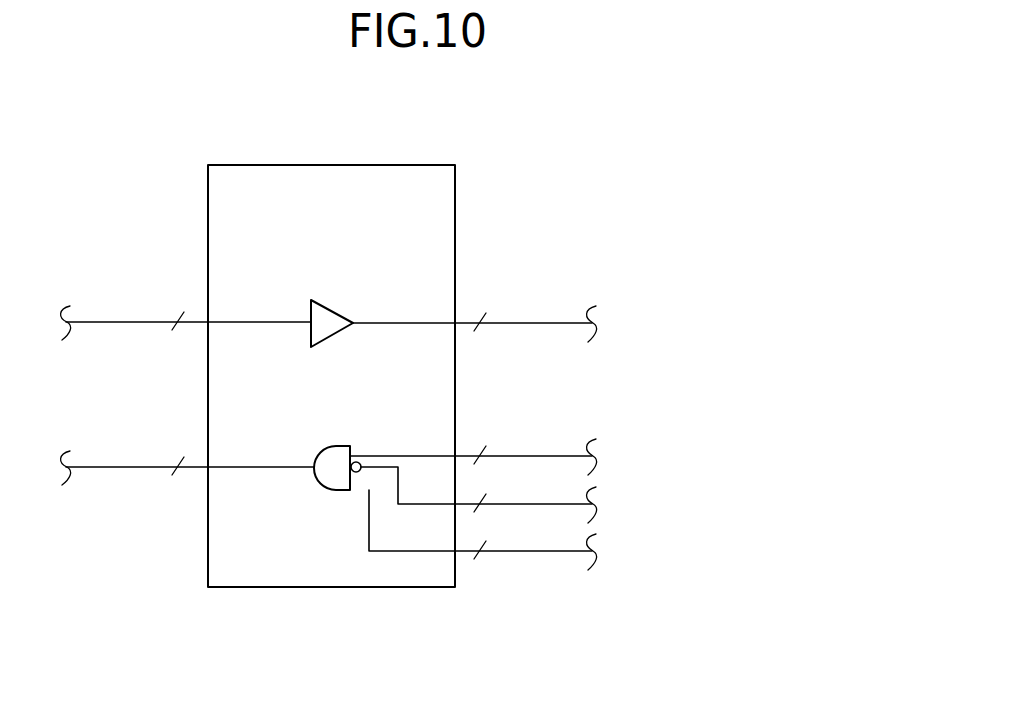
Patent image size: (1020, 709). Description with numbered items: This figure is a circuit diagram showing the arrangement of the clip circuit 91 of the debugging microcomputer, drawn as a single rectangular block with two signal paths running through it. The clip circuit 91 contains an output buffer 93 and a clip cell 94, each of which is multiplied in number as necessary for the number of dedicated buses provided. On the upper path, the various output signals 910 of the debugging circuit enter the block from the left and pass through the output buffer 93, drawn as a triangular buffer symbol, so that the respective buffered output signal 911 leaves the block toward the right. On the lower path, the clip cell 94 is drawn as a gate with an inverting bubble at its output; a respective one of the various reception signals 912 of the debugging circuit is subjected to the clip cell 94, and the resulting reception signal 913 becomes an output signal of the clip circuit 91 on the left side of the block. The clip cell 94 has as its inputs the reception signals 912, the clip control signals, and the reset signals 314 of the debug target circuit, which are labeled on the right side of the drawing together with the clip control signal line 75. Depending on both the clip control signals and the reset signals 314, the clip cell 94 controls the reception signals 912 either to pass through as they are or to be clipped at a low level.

The clip circuit 91 is at (421, 165).
The output buffer 93 is at (343, 312).
The clip cell 94 is at (343, 447).
The output signals 910 is at (127, 322).
The reception signal 913 is at (127, 467).
The output signal 911 is at (536, 323).
The reception signals 912 is at (536, 456).
The reset signals 314 is at (536, 504).
The clip control signal line 75 is at (536, 552).